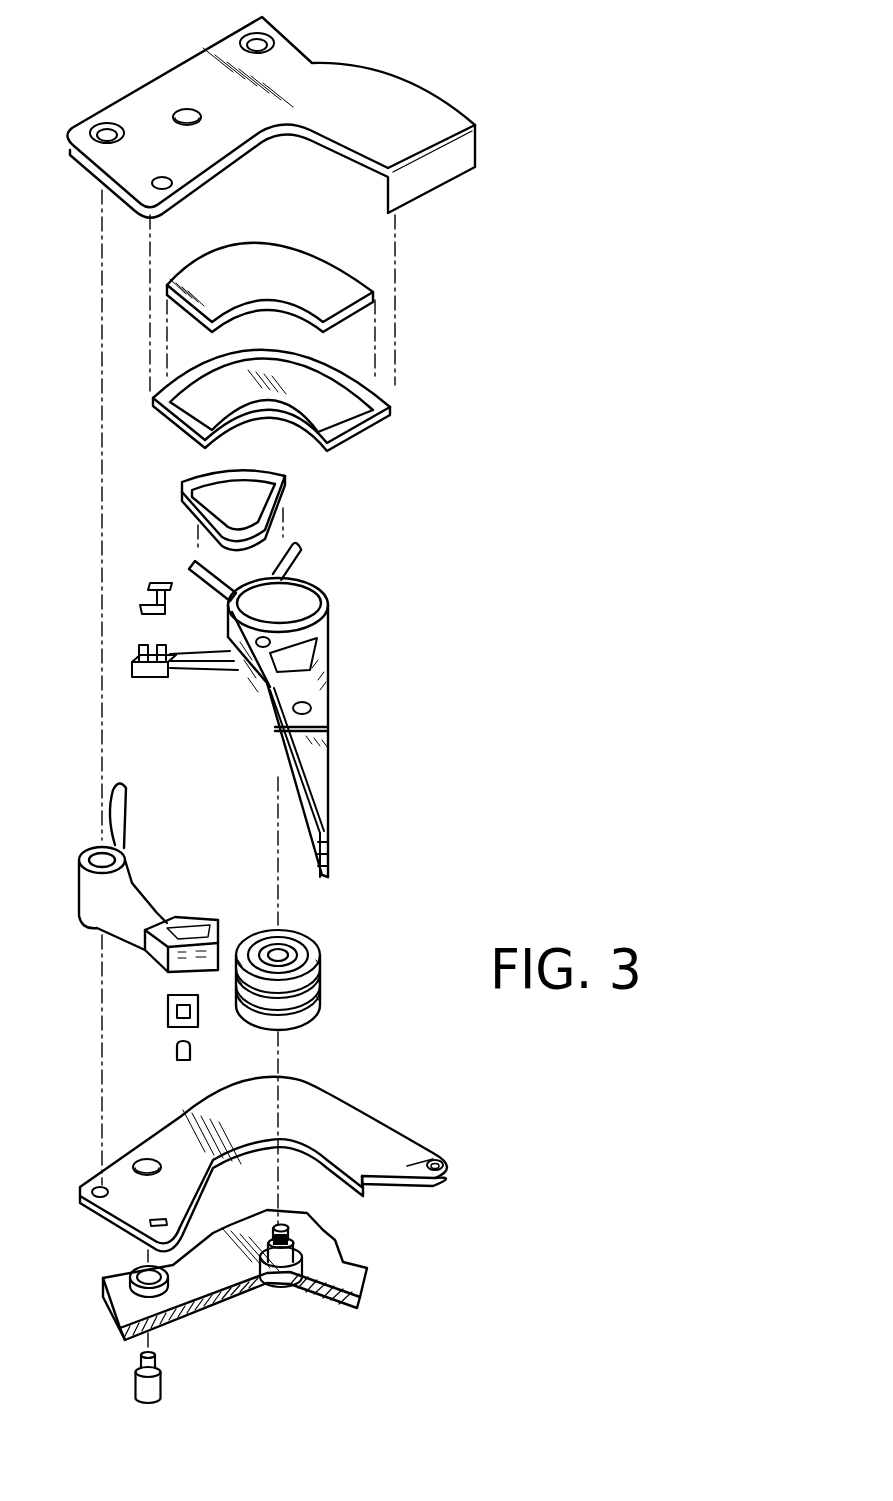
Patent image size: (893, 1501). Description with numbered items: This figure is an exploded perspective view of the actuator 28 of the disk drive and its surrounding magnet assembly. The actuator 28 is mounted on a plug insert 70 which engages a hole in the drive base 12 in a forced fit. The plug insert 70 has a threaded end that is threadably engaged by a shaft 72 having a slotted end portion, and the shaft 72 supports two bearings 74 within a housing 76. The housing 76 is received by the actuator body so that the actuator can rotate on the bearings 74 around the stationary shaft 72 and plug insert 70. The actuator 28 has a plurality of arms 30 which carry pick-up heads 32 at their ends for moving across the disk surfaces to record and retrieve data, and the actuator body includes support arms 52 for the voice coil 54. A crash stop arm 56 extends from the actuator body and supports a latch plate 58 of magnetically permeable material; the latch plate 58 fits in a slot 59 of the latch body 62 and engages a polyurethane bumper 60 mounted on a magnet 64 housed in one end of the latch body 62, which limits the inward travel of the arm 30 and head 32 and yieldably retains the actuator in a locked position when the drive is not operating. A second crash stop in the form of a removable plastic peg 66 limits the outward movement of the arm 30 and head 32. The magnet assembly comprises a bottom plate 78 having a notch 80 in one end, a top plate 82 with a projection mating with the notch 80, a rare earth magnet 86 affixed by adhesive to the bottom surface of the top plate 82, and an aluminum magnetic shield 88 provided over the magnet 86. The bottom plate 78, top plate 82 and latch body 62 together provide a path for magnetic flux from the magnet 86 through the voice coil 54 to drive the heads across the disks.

The drive base 12 is at (340, 1272).
The actuator 28 is at (430, 640).
The arm 30 is at (323, 775).
The pick-up head 32 is at (328, 840).
The support arm 52 is at (295, 545).
The voice coil 54 is at (287, 485).
The crash stop arm 56 is at (210, 668).
The latch plate 58 is at (147, 597).
The slot 59 is at (135, 653).
The polyurethane bumper 60 is at (167, 1015).
The latch body 62 is at (82, 897).
The magnet 64 is at (173, 1058).
The plastic peg 66 is at (135, 1382).
The plug insert 70 is at (278, 1293).
The shaft 72 is at (293, 943).
The bearings 74 is at (273, 1020).
The housing 76 is at (320, 997).
The bottom plate 78 is at (350, 1128).
The notch 80 is at (397, 1175).
The top plate 82 is at (372, 83).
The magnet 86 is at (278, 272).
The magnetic shield 88 is at (383, 400).